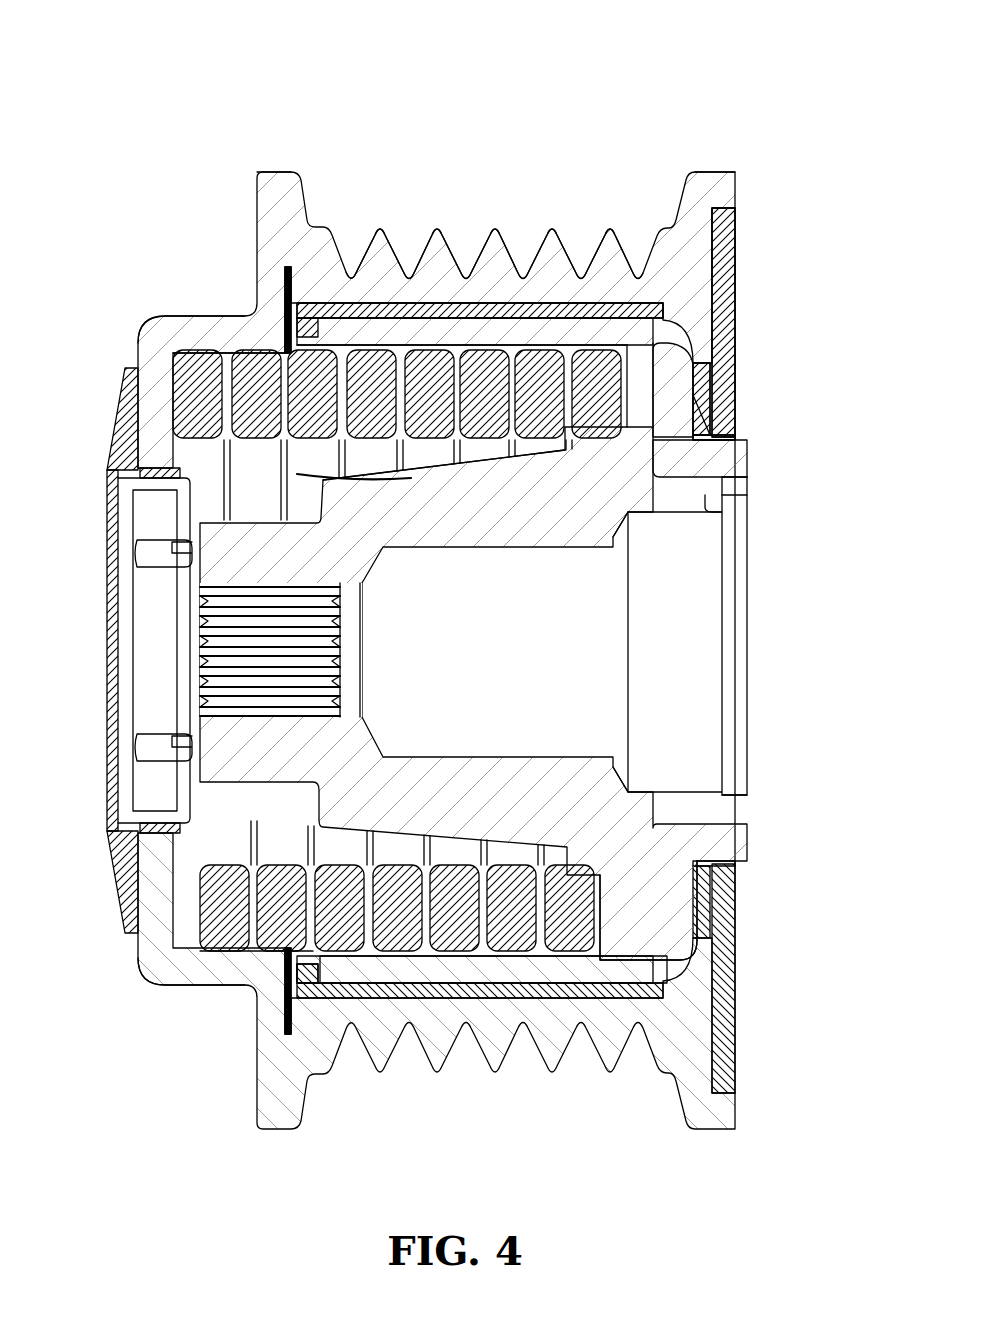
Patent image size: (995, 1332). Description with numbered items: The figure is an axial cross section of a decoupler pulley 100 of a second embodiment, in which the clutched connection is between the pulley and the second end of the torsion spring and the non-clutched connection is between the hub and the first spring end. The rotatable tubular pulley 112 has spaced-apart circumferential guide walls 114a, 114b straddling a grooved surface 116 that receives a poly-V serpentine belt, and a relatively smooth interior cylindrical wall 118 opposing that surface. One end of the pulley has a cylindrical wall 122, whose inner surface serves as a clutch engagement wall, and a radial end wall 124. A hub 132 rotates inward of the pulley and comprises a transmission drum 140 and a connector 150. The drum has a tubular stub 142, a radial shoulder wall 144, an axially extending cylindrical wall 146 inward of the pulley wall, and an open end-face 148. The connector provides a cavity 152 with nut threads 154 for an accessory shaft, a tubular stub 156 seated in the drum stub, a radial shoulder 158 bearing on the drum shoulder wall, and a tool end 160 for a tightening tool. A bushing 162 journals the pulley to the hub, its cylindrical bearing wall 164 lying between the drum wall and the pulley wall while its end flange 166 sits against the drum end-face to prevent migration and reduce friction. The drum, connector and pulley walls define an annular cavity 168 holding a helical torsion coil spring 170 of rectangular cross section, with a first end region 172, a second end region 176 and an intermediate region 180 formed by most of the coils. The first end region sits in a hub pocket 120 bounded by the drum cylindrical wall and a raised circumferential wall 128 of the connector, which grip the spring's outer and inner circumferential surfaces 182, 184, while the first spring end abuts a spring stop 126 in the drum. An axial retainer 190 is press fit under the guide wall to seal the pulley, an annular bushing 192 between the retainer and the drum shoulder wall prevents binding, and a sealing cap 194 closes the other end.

The decoupler pulley 100 is at (105, 62).
The pulley 112 is at (255, 200).
The circumferential guide wall 114a is at (275, 172).
The circumferential guide wall 114b is at (712, 172).
The grooved surface 116 is at (437, 228).
The interior cylindrical wall 118 is at (403, 312).
The hub pocket 120 is at (633, 358).
The pulley clutch engagement wall 122 is at (215, 318).
The radial end wall 124 is at (153, 393).
The spring stop 126 is at (650, 945).
The raised circumferential wall 128 is at (598, 437).
The hub 132 is at (718, 495).
The transmission drum 140 is at (675, 340).
The tubular stub 142 is at (748, 448).
The radial shoulder wall 144 is at (678, 415).
The cylindrical wall 146 is at (545, 357).
The open end-face 148 is at (320, 975).
The connector 150 is at (745, 635).
The cavity 152 is at (685, 678).
The nut threads 154 is at (720, 775).
The tubular stub 156 is at (705, 500).
The radial shoulder 158 is at (700, 432).
The tool end 160 is at (220, 640).
The bushing 162 is at (535, 312).
The cylindrical bearing wall 164 is at (545, 990).
The end flange 166 is at (298, 985).
The annular cavity 168 is at (300, 355).
The helical torsion coil spring 170 is at (470, 955).
The first end region 172 is at (595, 367).
The second end region 176 is at (200, 472).
The intermediate region 180 is at (431, 483).
The outer circumferential surface 182 is at (348, 952).
The inner circumferential surface 184 is at (335, 853).
The axial retainer 190 is at (735, 255).
The annular bushing 192 is at (700, 385).
The sealing cap 194 is at (110, 765).